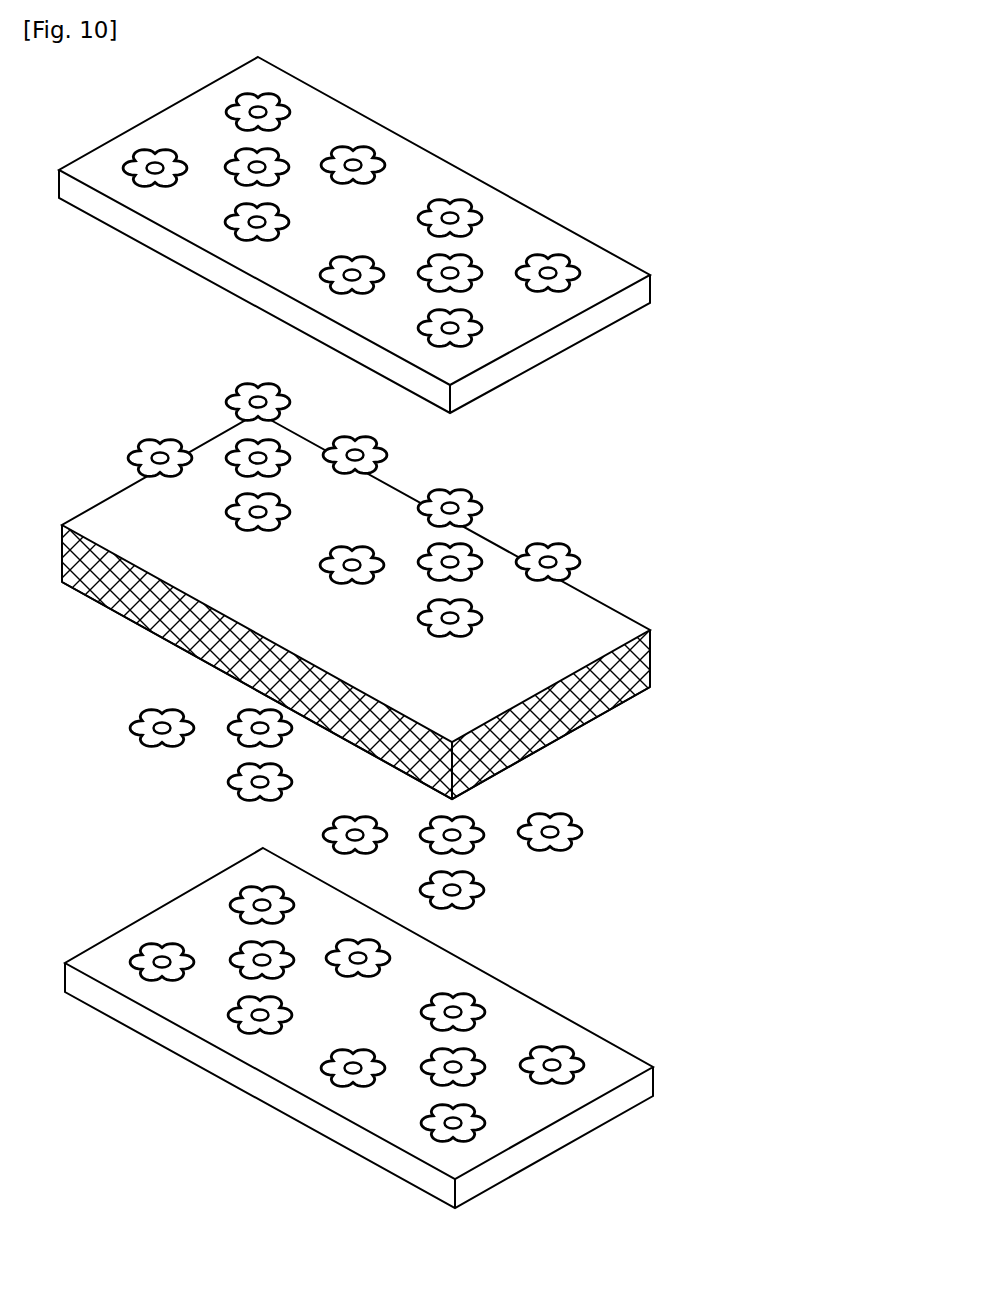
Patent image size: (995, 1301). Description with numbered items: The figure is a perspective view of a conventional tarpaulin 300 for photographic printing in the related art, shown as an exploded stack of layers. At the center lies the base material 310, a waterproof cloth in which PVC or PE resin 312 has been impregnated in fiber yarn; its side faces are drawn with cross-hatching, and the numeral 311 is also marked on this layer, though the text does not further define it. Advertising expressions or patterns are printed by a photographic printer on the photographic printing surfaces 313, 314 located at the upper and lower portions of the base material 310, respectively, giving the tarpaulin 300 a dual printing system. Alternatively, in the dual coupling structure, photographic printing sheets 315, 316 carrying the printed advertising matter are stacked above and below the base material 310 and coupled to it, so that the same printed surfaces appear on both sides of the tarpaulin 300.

The tarpaulin 300 is at (690, 154).
The base material 310 is at (447, 606).
The first layer 311 is at (632, 668).
The PVC or PE resin 312 is at (632, 697).
The photographic printing surface 313 is at (578, 565).
The photographic printing surface 314 is at (578, 833).
The photographic printing sheet 315 is at (610, 273).
The photographic printing sheet 316 is at (613, 1063).